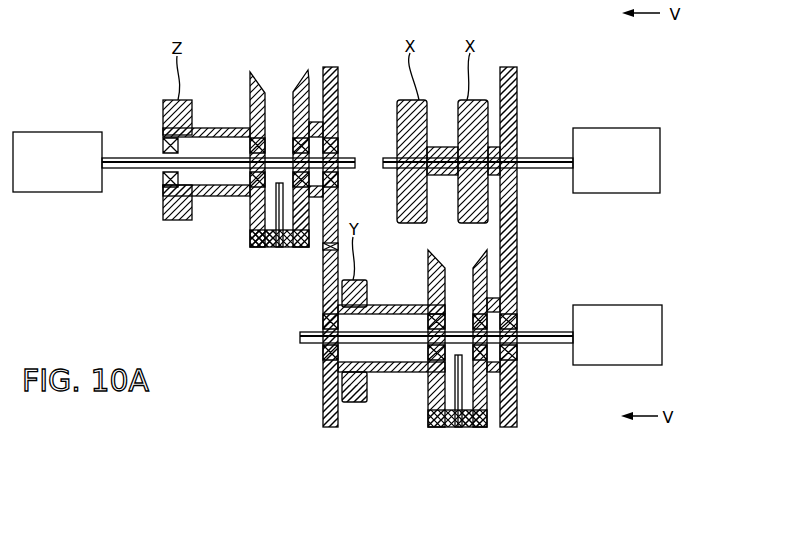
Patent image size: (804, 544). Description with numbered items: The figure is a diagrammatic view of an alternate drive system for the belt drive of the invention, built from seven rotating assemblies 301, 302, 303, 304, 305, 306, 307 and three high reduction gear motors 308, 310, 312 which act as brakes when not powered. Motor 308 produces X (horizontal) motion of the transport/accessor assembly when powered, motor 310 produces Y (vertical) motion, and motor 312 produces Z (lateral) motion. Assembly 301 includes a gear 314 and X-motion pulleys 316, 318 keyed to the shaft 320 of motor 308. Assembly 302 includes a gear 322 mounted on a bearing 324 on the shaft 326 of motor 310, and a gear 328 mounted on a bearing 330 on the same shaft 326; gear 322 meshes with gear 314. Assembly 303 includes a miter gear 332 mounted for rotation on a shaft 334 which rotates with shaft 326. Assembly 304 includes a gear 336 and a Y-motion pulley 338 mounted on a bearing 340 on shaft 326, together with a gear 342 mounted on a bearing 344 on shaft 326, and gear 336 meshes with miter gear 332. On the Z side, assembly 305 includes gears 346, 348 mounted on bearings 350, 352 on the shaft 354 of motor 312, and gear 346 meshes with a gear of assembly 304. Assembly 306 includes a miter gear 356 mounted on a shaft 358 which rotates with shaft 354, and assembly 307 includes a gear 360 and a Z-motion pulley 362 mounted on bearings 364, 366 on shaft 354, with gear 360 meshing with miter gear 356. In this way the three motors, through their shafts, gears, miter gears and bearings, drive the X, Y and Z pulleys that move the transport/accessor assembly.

The rotating assembly 301 is at (555, 244).
The rotating assembly 302 is at (527, 408).
The rotating assembly 303 is at (475, 438).
The rotating assembly 304 is at (377, 407).
The rotating assembly 305 is at (310, 219).
The rotating assembly 306 is at (253, 277).
The rotating assembly 307 is at (242, 243).
The high reduction gear motor 308 is at (645, 193).
The high reduction gear motor 310 is at (652, 366).
The high reduction gear motor 312 is at (47, 193).
The gear 314 is at (517, 126).
The X-motion pulley 316 is at (398, 108).
The X-motion pulley 318 is at (396, 195).
The shaft 320 is at (540, 170).
The gear 322 is at (517, 262).
The bearing 324 is at (517, 320).
The shaft 326 is at (540, 345).
The gear 328 is at (463, 320).
The bearing 330 is at (490, 296).
The miter gear 332 is at (445, 454).
The shaft 334 is at (478, 395).
The gear 336 is at (428, 262).
The Y-motion pulley 338 is at (367, 300).
The bearing 340 is at (386, 407).
The gear 342 is at (323, 400).
The bearing 344 is at (323, 360).
The gear 346 is at (323, 67).
The gear 348 is at (268, 126).
The bearing 350 is at (341, 148).
The bearing 352 is at (280, 125).
The shaft 354 is at (121, 170).
The miter gear 356 is at (265, 248).
The shaft 358 is at (250, 221).
The gear 360 is at (249, 73).
The Z-motion pulley 362 is at (163, 118).
The bearing 364 is at (234, 132).
The bearing 366 is at (160, 185).